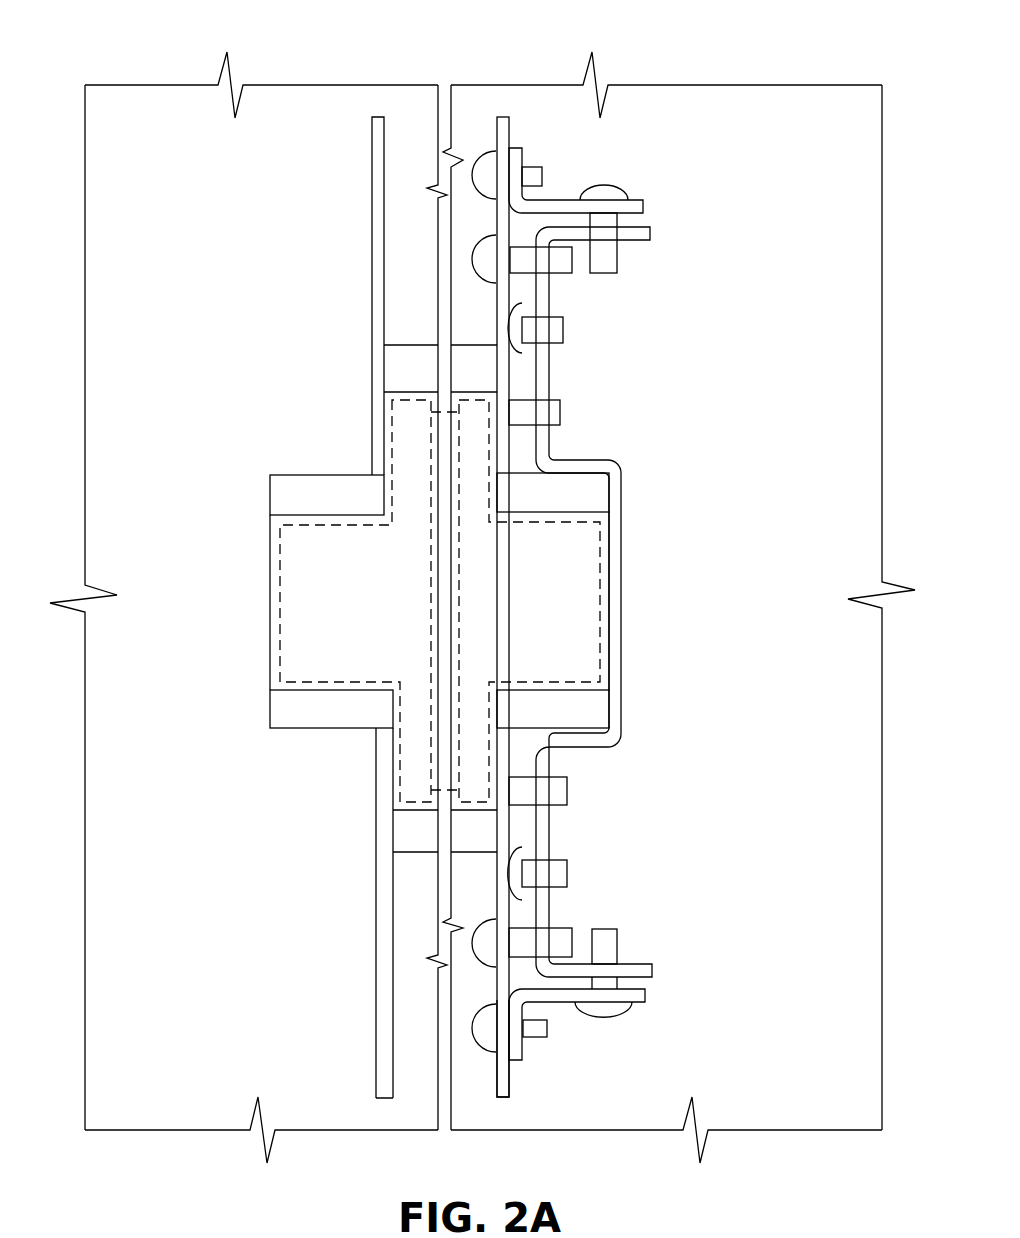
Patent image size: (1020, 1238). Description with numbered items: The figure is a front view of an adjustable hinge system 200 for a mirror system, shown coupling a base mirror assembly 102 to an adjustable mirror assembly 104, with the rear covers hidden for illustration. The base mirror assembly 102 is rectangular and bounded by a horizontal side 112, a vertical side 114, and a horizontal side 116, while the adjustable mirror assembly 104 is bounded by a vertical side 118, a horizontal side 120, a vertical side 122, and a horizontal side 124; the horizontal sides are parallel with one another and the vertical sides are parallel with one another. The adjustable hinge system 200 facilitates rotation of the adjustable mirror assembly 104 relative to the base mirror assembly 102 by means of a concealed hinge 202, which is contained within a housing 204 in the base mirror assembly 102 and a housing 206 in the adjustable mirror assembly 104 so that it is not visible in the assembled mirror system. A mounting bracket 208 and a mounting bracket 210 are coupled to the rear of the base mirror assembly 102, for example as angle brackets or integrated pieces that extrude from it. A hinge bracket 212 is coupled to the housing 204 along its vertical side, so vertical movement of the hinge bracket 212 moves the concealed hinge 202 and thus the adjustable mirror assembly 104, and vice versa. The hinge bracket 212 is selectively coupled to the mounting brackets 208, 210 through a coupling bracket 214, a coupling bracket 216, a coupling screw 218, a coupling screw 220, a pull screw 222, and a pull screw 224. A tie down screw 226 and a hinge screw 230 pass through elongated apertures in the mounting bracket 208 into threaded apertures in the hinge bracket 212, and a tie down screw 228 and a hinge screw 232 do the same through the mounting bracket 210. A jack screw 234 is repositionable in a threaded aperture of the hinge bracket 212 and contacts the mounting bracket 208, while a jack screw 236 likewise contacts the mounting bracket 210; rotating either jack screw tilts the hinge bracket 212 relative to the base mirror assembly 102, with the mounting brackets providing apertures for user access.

The adjustable hinge system 200 is at (77, 54).
The base mirror assembly 102 is at (850, 333).
The adjustable mirror assembly 104 is at (118, 355).
The horizontal side 112 is at (517, 83).
The vertical side 114 is at (883, 232).
The horizontal side 116 is at (535, 1130).
The vertical side 118 is at (441, 83).
The horizontal side 120 is at (155, 83).
The vertical side 122 is at (83, 228).
The horizontal side 124 is at (187, 1130).
The concealed hinge 202 is at (280, 575).
The housing 204 is at (580, 473).
The housing 206 is at (290, 475).
The mounting bracket 208 is at (510, 115).
The mounting bracket 210 is at (503, 1097).
The hinge bracket 212 is at (622, 477).
The coupling bracket 214 is at (645, 205).
The coupling bracket 216 is at (645, 993).
The coupling screw 218 is at (543, 175).
The coupling screw 220 is at (547, 1028).
The pull screw 222 is at (618, 260).
The pull screw 224 is at (618, 945).
The tie down screw 226 is at (562, 273).
The tie down screw 228 is at (572, 930).
The hinge screw 230 is at (562, 400).
The hinge screw 232 is at (567, 790).
The jack screw 234 is at (563, 328).
The jack screw 236 is at (567, 873).